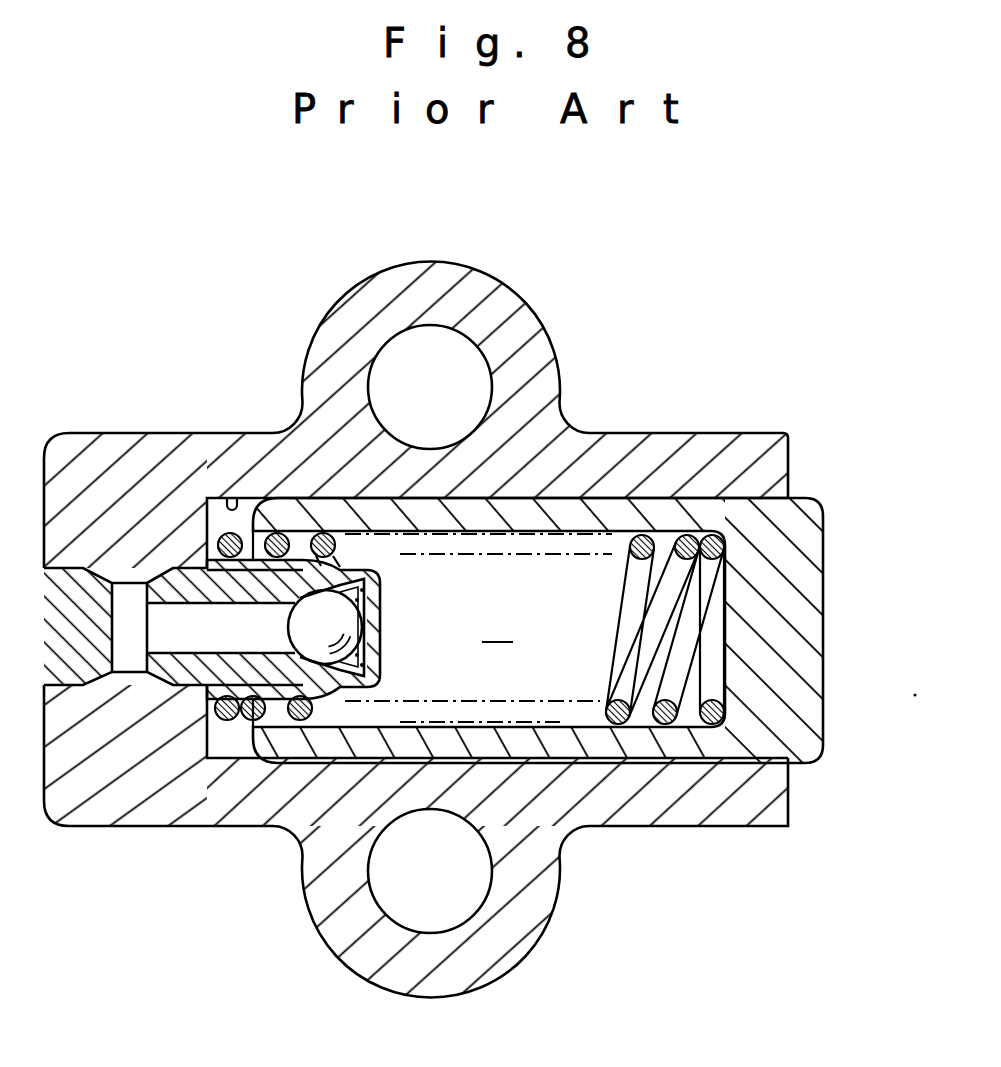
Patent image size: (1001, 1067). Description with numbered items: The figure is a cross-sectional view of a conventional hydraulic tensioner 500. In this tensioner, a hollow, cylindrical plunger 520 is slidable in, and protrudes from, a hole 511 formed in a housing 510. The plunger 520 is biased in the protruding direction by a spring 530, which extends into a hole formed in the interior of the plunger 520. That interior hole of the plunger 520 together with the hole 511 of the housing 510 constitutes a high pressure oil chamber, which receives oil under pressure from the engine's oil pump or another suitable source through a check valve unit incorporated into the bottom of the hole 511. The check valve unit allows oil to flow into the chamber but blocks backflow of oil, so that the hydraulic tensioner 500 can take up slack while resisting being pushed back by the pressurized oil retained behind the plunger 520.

The hydraulic tensioner 500 is at (750, 255).
The housing 510 is at (725, 460).
The hole 511 is at (230, 503).
The plunger 520 is at (807, 631).
The spring 530 is at (662, 727).